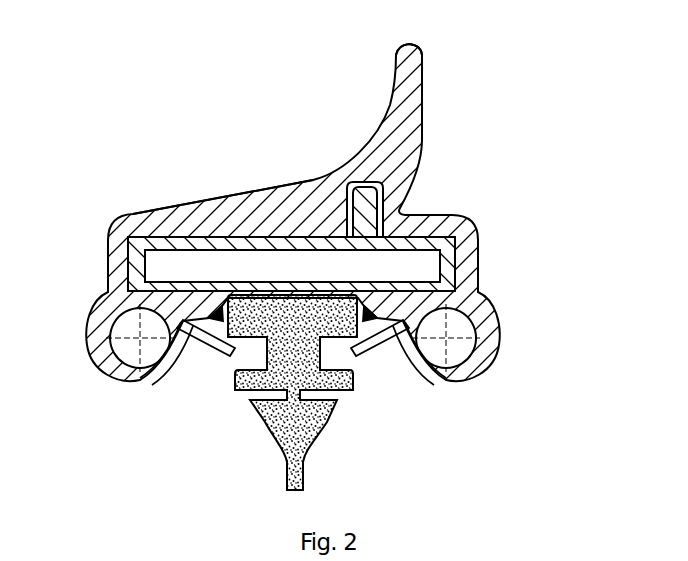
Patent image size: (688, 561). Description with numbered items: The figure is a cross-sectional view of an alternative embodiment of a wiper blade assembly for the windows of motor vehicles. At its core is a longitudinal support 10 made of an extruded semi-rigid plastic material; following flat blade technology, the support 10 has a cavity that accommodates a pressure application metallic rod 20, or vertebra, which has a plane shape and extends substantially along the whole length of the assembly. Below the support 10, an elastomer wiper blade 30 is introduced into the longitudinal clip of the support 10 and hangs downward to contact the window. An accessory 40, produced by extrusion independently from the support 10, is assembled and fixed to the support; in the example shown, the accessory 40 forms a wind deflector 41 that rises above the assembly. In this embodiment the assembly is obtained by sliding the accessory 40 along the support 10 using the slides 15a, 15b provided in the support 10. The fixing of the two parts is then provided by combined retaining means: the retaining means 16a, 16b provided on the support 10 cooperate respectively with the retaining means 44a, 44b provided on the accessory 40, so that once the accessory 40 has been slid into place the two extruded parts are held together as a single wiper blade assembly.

The longitudinal support 10 is at (480, 238).
The slide 15a is at (222, 352).
The slide 15b is at (364, 352).
The retaining means 16a is at (190, 347).
The retaining means 16b is at (396, 347).
The pressure application metallic rod 20 is at (180, 232).
The elastomer wiper blade 30 is at (287, 481).
The accessory 40 is at (431, 151).
The wind deflector 41 is at (403, 88).
The retaining means 44a is at (107, 285).
The retaining means 44b is at (478, 287).